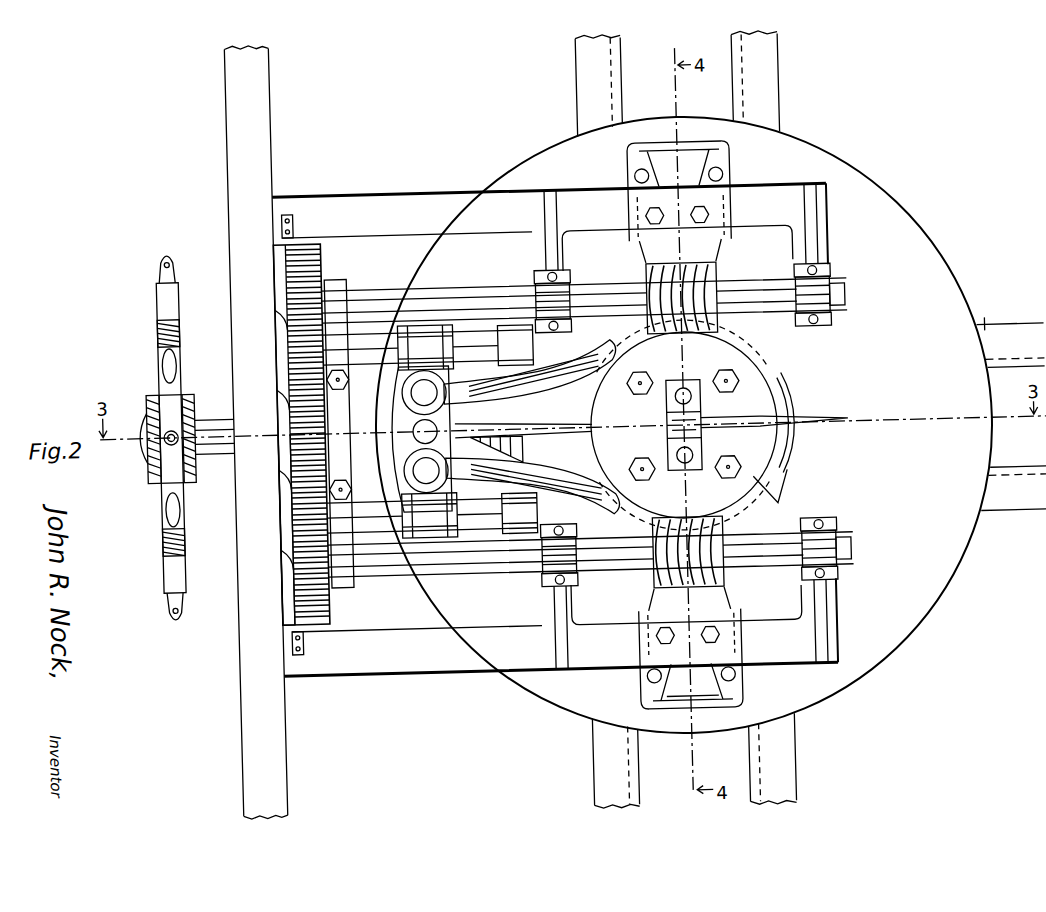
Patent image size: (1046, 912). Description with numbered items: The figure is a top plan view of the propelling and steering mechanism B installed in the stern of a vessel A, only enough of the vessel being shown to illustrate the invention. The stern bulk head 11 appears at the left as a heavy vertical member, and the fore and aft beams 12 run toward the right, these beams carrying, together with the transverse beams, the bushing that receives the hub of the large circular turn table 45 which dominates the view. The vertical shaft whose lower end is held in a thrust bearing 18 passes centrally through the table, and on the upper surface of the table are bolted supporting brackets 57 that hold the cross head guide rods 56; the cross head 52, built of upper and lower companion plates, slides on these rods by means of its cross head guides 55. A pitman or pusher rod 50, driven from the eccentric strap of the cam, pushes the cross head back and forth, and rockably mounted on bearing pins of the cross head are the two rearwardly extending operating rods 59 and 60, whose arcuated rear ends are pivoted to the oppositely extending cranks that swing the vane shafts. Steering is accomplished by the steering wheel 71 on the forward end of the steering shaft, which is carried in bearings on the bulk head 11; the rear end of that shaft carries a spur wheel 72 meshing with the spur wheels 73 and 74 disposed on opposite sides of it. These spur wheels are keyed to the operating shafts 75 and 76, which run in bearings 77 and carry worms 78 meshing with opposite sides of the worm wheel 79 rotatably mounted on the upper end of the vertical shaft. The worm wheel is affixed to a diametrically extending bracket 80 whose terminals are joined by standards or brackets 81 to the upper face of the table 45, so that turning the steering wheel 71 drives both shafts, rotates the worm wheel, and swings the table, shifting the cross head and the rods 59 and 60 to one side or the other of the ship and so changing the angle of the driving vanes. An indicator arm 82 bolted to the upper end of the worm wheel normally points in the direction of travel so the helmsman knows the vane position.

The stern bulk head 11 is at (277, 760).
The fore and aft beams 12 is at (1020, 338).
The thrust bearing 18 is at (787, 748).
The turn table 45 is at (854, 684).
The pitman or pusher rod 50 is at (502, 433).
The cross head 52 is at (394, 446).
The cross head guides 55 is at (425, 323).
The cross head guide rods 56 is at (384, 523).
The supporting brackets 57 is at (505, 556).
The operating rod 59 is at (622, 346).
The operating rod 60 is at (533, 486).
The steering wheel 71 is at (163, 524).
The spur wheel 72 is at (343, 415).
The spur wheel 73 is at (329, 269).
The spur wheel 74 is at (322, 596).
The operating shaft 75 is at (471, 290).
The operating shaft 76 is at (442, 568).
The bearings 77 is at (600, 568).
The worms 78 is at (654, 271).
The worm wheel 79 is at (692, 424).
The diametrically extending bracket 80 is at (646, 603).
The standards or brackets 81 is at (665, 700).
The indicator arm 82 is at (806, 422).
The vessel A is at (1012, 516).
The propelling and steering mechanism B is at (845, 541).